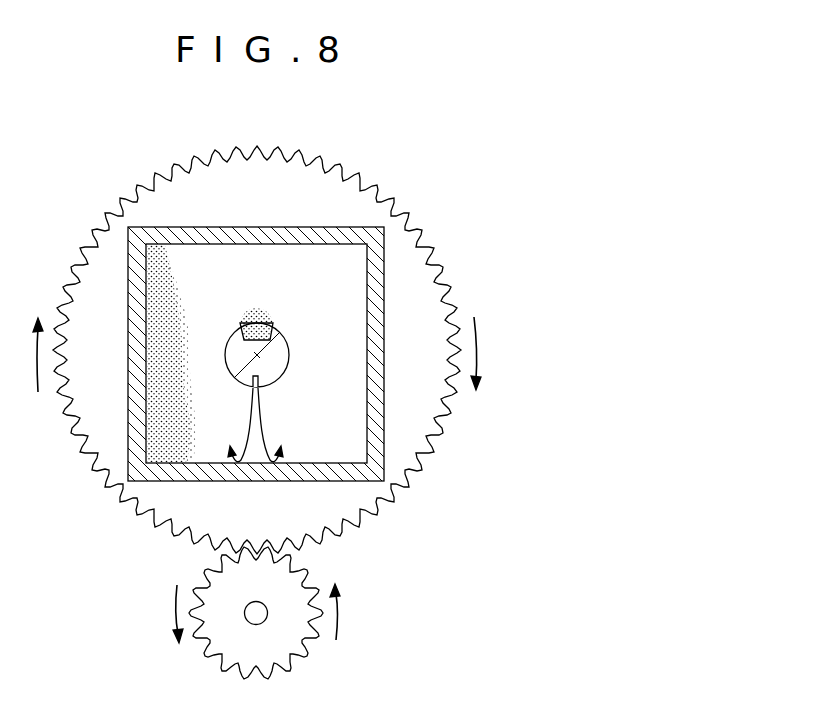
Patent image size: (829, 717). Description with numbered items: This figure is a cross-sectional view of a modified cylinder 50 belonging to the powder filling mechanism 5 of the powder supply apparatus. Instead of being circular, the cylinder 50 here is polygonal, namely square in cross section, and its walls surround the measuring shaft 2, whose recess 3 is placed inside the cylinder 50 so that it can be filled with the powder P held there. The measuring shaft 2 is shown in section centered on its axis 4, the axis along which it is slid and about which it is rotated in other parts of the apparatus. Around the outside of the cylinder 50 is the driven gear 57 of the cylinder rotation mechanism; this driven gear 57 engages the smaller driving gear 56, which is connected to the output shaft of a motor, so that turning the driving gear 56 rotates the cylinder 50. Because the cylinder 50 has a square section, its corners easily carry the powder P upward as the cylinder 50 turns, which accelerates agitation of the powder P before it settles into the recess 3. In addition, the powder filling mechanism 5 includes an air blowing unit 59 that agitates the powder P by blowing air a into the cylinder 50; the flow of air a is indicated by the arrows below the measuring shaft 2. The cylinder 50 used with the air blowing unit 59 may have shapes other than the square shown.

The powder filling mechanism 5 is at (520, 172).
The cylinder 50 is at (362, 227).
The driven gear 57 is at (415, 440).
The driving gear 56 is at (297, 652).
The measuring shaft 2 is at (297, 353).
The recess 3 is at (247, 322).
The axis 4 is at (258, 356).
The air blowing unit 59 is at (252, 382).
The powder P is at (160, 358).
The air a is at (252, 427).